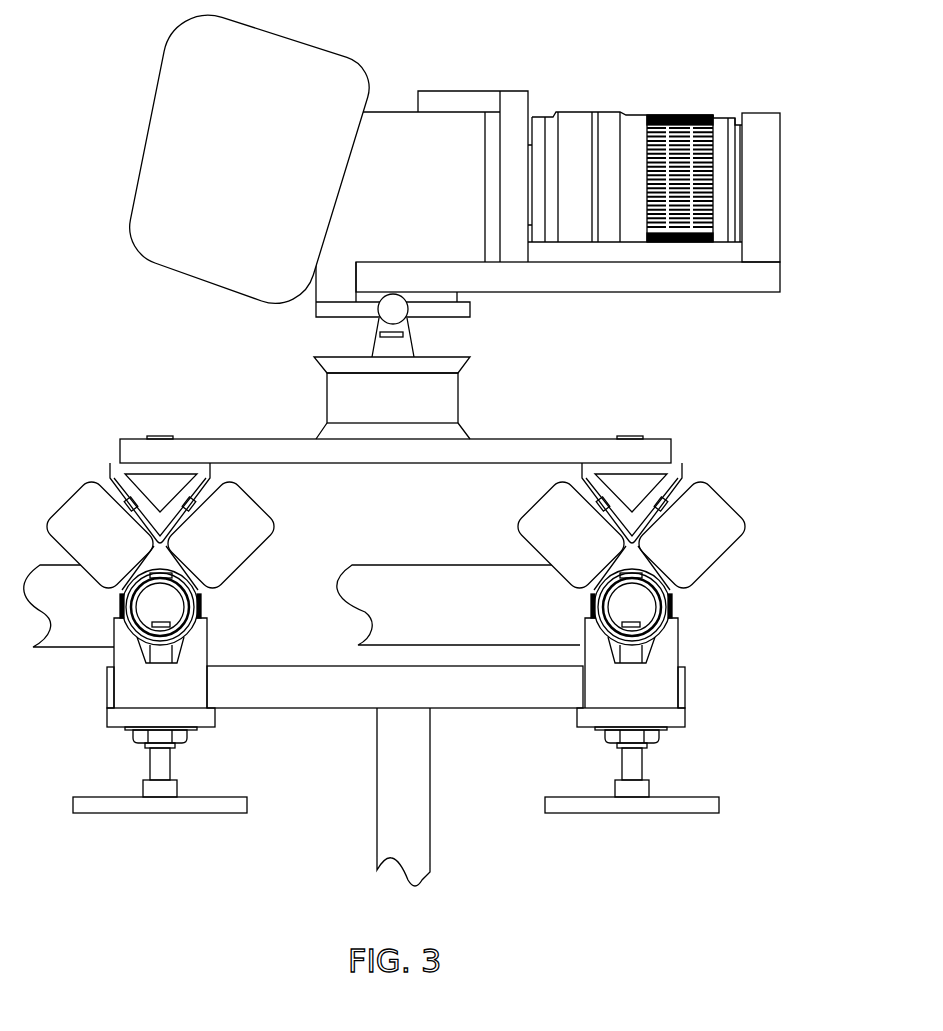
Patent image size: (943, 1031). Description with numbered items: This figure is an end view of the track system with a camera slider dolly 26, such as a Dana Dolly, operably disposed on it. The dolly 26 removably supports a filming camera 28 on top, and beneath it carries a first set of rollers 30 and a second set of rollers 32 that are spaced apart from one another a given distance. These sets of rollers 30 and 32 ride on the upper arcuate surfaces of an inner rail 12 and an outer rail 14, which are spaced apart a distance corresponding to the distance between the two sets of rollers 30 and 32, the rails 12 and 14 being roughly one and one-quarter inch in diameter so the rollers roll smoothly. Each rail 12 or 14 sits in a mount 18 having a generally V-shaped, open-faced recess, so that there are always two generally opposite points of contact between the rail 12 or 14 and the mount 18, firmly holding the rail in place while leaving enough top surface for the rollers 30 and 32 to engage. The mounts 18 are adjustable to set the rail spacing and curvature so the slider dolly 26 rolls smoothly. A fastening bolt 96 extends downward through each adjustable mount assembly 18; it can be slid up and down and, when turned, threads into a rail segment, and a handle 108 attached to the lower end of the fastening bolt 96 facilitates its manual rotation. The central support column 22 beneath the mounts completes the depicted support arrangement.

The inner rail 12 is at (674, 603).
The outer rail 14 is at (204, 603).
The mount 18 is at (137, 686).
The support column 22 is at (383, 805).
The slider dolly 26 is at (233, 438).
The filming camera 28 is at (391, 122).
The first set of rollers 30 is at (727, 499).
The second set of rollers 32 is at (66, 499).
The fastening bolt 96 is at (640, 766).
The handle 108 is at (707, 806).